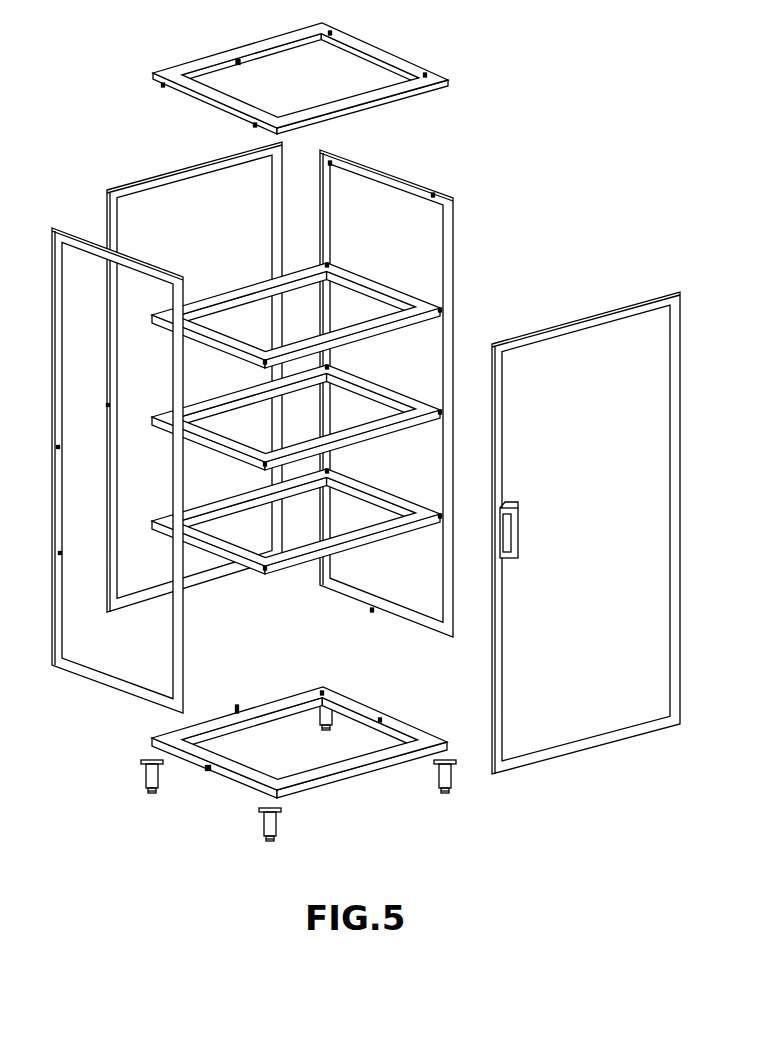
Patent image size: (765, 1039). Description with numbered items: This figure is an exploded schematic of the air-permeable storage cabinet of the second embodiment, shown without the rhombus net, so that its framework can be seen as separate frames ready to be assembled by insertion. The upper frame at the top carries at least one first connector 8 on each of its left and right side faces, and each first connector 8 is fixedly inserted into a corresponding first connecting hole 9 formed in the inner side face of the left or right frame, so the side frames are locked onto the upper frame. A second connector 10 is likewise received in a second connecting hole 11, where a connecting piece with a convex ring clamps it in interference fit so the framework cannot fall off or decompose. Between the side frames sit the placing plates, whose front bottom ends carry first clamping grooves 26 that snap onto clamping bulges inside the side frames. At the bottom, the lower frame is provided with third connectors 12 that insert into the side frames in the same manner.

The first connector 8 is at (163, 85).
The second connector 10 is at (238, 62).
The second connecting hole 11 is at (195, 167).
The first connecting hole 9 is at (433, 195).
The first clamping groove 26 is at (267, 573).
The third connector 12 is at (208, 768).